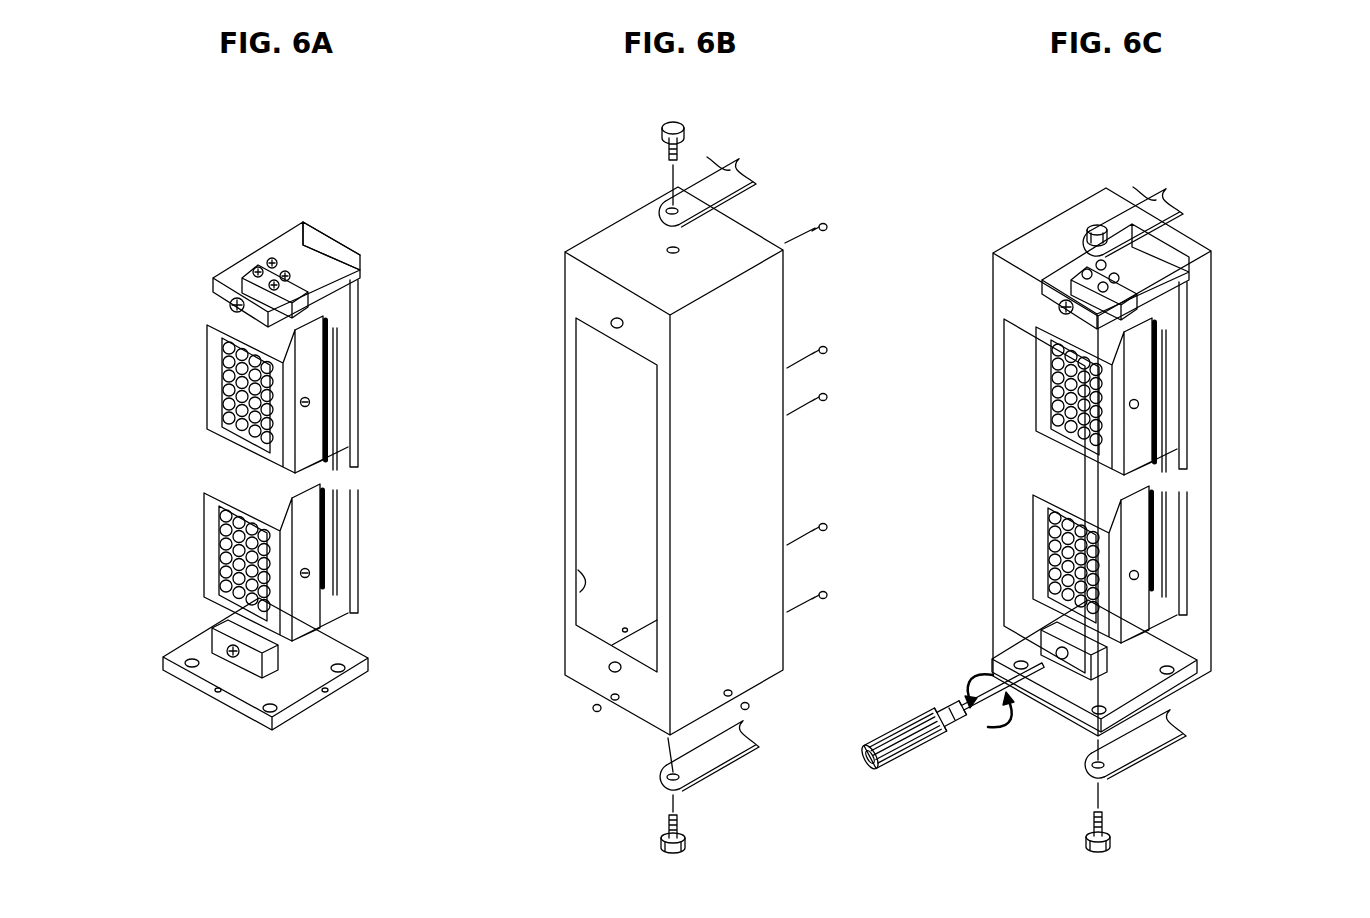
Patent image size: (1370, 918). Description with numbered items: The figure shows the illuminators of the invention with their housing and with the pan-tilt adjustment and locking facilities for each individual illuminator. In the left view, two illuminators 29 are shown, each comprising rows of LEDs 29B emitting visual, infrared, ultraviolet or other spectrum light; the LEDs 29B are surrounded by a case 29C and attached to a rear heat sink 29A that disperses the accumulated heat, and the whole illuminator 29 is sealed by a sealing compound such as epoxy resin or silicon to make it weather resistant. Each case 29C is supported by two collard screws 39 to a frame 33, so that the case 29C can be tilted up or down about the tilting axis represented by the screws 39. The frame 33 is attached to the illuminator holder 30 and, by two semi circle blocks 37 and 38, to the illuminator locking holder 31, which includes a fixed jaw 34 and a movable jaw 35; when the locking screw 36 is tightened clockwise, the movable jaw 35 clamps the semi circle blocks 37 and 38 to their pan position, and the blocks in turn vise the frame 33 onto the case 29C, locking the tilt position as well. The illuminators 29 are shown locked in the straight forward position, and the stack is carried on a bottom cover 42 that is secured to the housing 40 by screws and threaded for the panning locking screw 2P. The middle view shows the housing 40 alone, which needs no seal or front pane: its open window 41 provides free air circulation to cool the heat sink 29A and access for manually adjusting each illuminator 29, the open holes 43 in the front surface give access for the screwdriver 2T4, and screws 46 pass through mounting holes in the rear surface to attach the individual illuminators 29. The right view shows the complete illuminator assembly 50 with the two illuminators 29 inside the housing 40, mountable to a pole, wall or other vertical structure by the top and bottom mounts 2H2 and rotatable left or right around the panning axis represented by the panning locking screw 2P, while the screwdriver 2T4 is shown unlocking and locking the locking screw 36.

In FIG. 6A, the illuminator 29 is at (268, 462).
In FIG. 6C, the illuminator 29 is at (978, 389).
In FIG. 6A, the heat sink 29A is at (331, 350).
In FIG. 6A, the LEDs 29B is at (223, 415).
In FIG. 6A, the case 29C is at (207, 347).
In FIG. 6A, the illuminator holder 30 is at (359, 338).
In FIG. 6A, the illuminator locking holder 31 is at (357, 268).
In FIG. 6A, the frame 33 is at (310, 362).
In FIG. 6A, the fixed jaw 34 is at (292, 242).
In FIG. 6A, the movable jaw 35 is at (235, 277).
In FIG. 6A, the locking screw 36 is at (231, 303).
In FIG. 6A, the semi circle block 37 is at (265, 268).
In FIG. 6A, the semi circle block 38 is at (297, 280).
In FIG. 6A, the collard screws 39 is at (310, 403).
In FIG. 6B, the housing 40 is at (755, 318).
In FIG. 6C, the housing 40 is at (1200, 633).
In FIG. 6B, the open window 41 is at (582, 588).
In FIG. 6A, the bottom cover 42 is at (340, 685).
In FIG. 6B, the open holes 43 is at (612, 320).
In FIG. 6B, the screws 46 is at (826, 226).
In FIG. 6C, the illuminator assembly 50 is at (1268, 142).
In FIG. 6B, the panning locking screw 2P is at (677, 128).
In FIG. 6C, the panning locking screw 2P is at (1095, 230).
In FIG. 6B, the mounts 2H2 is at (723, 180).
In FIG. 6C, the mounts 2H2 is at (1142, 215).
In FIG. 6C, the screwdriver 2T4 is at (908, 768).